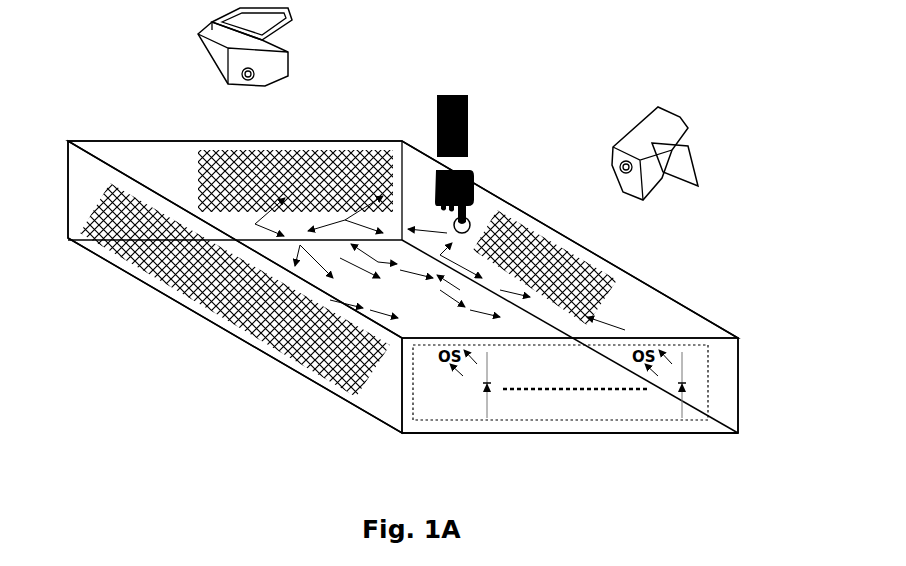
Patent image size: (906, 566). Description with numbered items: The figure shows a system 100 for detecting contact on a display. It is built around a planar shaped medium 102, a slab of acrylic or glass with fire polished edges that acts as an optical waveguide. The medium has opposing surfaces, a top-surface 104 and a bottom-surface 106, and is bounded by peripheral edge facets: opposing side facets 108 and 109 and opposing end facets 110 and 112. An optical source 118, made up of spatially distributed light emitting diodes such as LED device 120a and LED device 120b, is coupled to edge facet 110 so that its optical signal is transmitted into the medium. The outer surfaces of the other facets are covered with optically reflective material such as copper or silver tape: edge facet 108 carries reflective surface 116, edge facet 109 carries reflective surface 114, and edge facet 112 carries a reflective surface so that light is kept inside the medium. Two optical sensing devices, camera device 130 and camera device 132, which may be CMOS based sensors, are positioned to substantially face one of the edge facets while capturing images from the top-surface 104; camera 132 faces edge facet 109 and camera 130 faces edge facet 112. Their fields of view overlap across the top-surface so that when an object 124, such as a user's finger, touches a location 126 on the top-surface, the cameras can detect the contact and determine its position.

The system for detecting contact on a display 100 is at (463, 24).
The planar shaped medium 102 is at (128, 136).
The top-surface 104 is at (603, 315).
The bottom-surface 106 is at (697, 437).
The edge facet 108 is at (70, 164).
The edge facet 109 is at (412, 158).
The edge facet 110 is at (720, 352).
The edge facet 112 is at (172, 157).
The reflective surface 114 is at (550, 268).
The reflective surface 116 is at (173, 259).
The optical source 118 is at (333, 167).
The LED device 120a is at (484, 383).
The LED device 120b is at (688, 383).
The object 124 is at (470, 178).
The location 126 is at (470, 218).
The camera device 130 is at (213, 48).
The camera device 132 is at (645, 115).